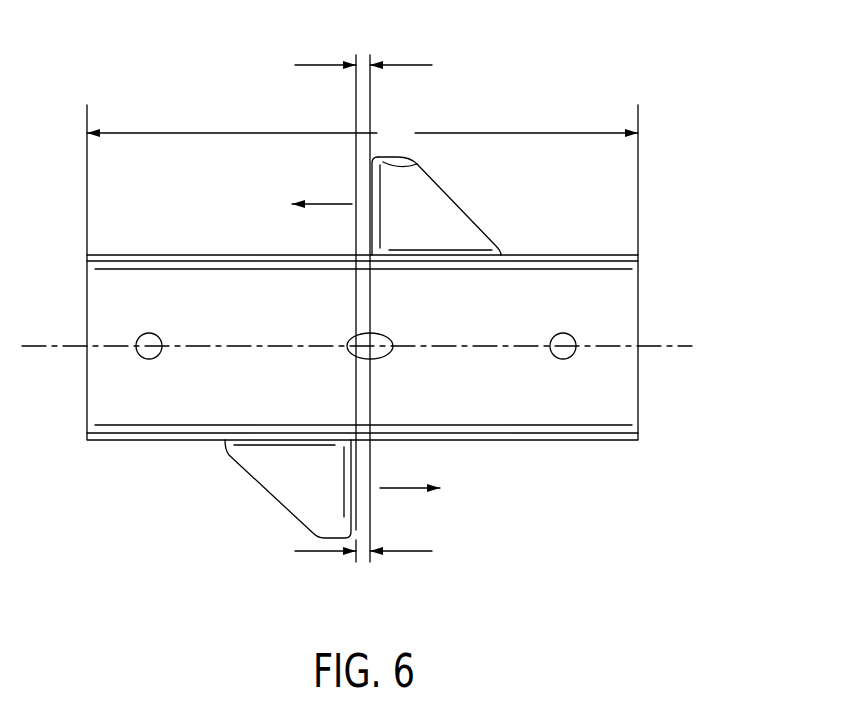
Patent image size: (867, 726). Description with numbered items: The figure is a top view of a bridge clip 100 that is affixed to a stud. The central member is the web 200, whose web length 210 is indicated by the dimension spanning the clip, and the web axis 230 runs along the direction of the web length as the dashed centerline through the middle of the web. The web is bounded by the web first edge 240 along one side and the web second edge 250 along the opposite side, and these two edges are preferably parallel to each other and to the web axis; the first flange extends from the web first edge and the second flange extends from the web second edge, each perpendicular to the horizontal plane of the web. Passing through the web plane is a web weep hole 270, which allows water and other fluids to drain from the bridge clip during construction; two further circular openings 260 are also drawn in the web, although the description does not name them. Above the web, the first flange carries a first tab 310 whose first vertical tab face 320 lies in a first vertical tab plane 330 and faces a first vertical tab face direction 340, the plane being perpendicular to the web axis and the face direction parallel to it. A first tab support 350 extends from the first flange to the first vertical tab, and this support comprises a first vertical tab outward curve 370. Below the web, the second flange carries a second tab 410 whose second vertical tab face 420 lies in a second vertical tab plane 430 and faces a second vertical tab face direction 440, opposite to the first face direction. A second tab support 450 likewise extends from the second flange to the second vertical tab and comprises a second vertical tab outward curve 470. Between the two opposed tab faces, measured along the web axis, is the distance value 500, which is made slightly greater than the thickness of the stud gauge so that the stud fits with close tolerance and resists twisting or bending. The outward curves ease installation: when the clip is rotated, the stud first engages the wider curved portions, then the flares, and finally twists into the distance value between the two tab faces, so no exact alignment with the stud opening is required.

The bridge clip 100 is at (175, 120).
The web 200 is at (377, 347).
The web length 210 is at (362, 180).
The web axis 230 is at (596, 350).
The web first edge 240 is at (643, 272).
The web second edge 250 is at (650, 430).
The hole 260 is at (158, 336).
The web weep hole 270 is at (383, 337).
The first tab 310 is at (480, 177).
The first vertical tab face 320 is at (365, 222).
The first vertical tab plane 330 is at (372, 88).
The first vertical tab face direction 340 is at (352, 204).
The first tab support 350 is at (435, 214).
The first vertical tab outward curve 370 is at (420, 163).
The second tab 410 is at (249, 495).
The second vertical tab face 420 is at (358, 475).
The second vertical tab plane 430 is at (355, 88).
The second vertical tab face direction 440 is at (398, 491).
The second tab support 450 is at (310, 495).
The second vertical tab outward curve 470 is at (347, 530).
The distance value 500 is at (357, 311).